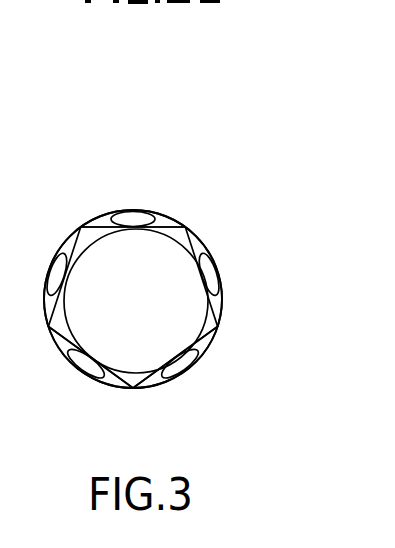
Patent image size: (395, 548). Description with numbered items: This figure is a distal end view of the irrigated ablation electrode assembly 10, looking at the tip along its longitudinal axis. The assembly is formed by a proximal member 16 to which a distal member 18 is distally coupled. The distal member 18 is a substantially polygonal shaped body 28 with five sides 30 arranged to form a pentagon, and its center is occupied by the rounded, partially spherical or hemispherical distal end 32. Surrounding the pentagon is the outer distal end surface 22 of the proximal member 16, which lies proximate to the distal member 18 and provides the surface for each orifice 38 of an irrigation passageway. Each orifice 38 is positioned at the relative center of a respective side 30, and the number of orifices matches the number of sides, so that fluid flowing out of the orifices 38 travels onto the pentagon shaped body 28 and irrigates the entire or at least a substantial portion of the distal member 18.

The electrode assembly 10 is at (259, 93).
The proximal member 16 is at (219, 227).
The distal member 18 is at (238, 334).
The outer distal end surface 22 is at (167, 222).
The polygonal shaped body 28 is at (130, 375).
The sides 30 is at (160, 378).
The rounded distal end 32 is at (133, 298).
The orifice 38 is at (130, 217).